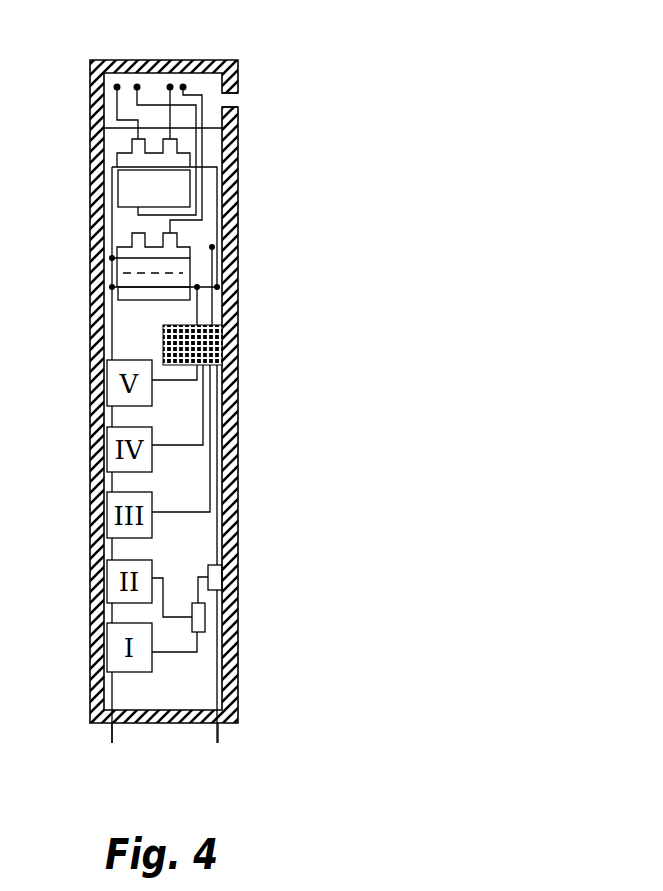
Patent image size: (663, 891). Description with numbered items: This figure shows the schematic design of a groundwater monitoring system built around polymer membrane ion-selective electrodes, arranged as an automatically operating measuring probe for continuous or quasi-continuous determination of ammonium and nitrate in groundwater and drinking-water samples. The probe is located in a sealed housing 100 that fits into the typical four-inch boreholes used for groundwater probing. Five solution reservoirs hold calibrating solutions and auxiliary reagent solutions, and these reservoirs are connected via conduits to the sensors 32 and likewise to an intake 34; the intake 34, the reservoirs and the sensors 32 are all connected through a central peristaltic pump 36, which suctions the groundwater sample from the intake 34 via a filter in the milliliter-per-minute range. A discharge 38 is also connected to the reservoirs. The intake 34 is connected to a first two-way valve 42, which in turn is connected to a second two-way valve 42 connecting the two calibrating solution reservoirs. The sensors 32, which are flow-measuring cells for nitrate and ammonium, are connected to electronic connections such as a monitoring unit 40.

The sealed housing 100 is at (203, 60).
The monitoring unit 40 is at (214, 102).
The sensors 32 is at (173, 148).
The pump 36 is at (220, 345).
The two-way valve 42 is at (205, 618).
The discharge 38 is at (113, 740).
The intake 34 is at (218, 738).